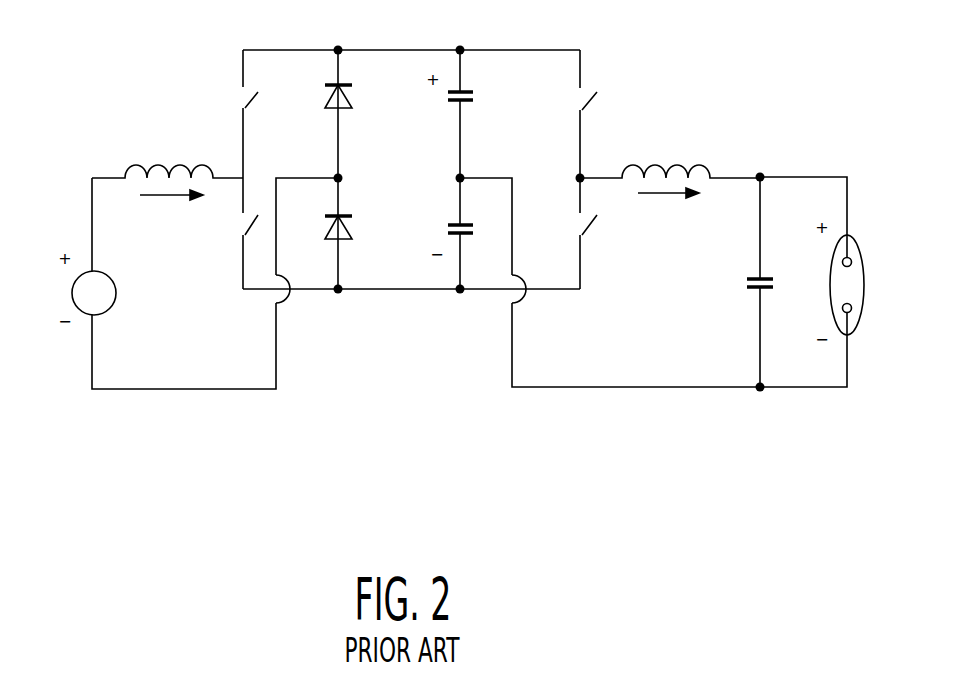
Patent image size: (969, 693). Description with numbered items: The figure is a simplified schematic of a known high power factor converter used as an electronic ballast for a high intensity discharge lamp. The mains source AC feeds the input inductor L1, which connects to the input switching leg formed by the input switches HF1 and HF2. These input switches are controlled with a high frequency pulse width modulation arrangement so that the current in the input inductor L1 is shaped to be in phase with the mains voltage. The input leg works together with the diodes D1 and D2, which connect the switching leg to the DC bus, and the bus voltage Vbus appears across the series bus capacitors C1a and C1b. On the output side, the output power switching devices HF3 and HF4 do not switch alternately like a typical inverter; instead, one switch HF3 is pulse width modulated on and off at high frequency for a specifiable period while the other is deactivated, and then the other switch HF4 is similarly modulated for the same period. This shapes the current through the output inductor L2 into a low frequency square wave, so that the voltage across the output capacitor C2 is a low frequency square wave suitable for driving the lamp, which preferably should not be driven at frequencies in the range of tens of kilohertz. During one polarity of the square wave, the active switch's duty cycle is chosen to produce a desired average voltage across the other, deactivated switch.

The mains voltage source AC is at (94, 293).
The input inductor L1 is at (167, 166).
The output inductor L2 is at (670, 165).
The input switch HF1 is at (228, 114).
The input switch HF2 is at (230, 233).
The output power switching device HF3 is at (566, 114).
The output power switching device HF4 is at (566, 233).
The diode D1 is at (321, 114).
The diode D2 is at (321, 233).
The bus capacitor C1a is at (473, 114).
The bus capacitor C1b is at (473, 233).
The output capacitor C2 is at (743, 282).
The bus voltage Vbus is at (397, 92).